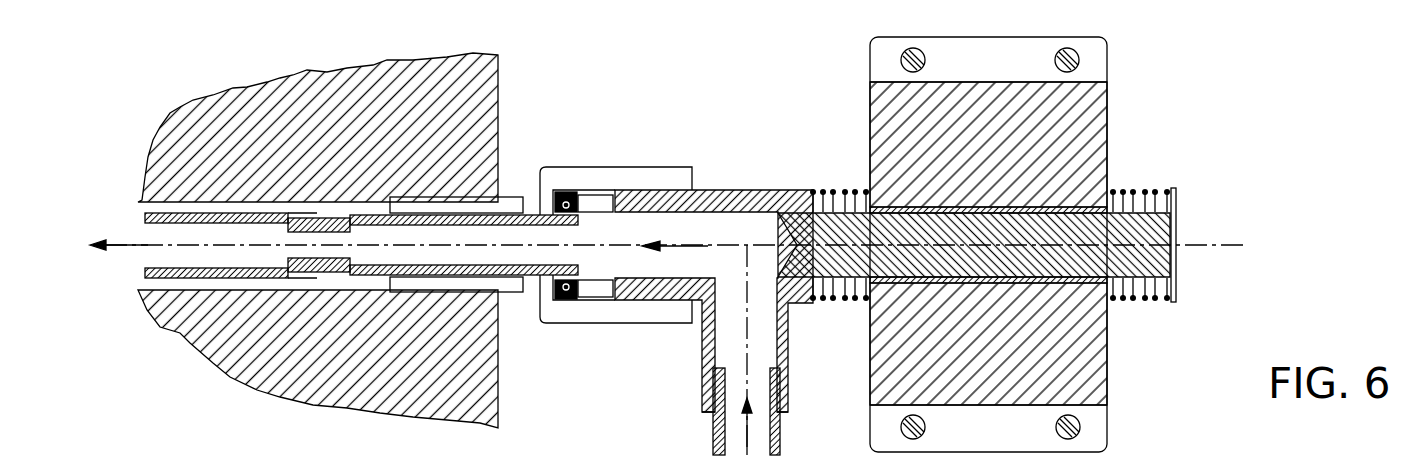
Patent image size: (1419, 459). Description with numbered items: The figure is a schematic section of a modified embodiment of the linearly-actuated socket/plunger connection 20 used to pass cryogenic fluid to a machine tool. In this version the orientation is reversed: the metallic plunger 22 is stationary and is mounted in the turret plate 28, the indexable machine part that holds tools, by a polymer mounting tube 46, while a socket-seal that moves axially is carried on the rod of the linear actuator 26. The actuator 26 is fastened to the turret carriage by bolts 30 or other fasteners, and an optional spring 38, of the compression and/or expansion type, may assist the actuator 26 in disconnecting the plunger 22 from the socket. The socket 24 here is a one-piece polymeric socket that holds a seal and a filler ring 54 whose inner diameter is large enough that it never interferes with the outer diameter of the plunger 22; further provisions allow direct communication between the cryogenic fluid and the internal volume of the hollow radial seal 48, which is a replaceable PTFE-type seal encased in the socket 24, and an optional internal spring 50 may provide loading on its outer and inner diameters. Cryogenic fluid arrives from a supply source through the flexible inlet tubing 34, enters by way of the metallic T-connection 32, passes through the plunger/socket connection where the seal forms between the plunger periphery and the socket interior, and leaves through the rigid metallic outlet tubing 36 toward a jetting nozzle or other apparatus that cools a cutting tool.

The linearly-actuated socket/plunger connection 20 is at (1300, 135).
The plunger 22 is at (548, 300).
The socket 24 is at (655, 167).
The linear actuator 26 is at (1100, 117).
The turret plate 28 is at (296, 82).
The bolts 30 is at (898, 63).
The T-connection 32 is at (790, 340).
The inlet tubing 34 is at (780, 440).
The outlet tubing 36 is at (131, 222).
The spring 38 is at (1156, 188).
The mounting tube 46 is at (508, 200).
The hollow radial seal 48 is at (565, 300).
The internal spring 50 is at (564, 195).
The filler ring 54 is at (597, 200).